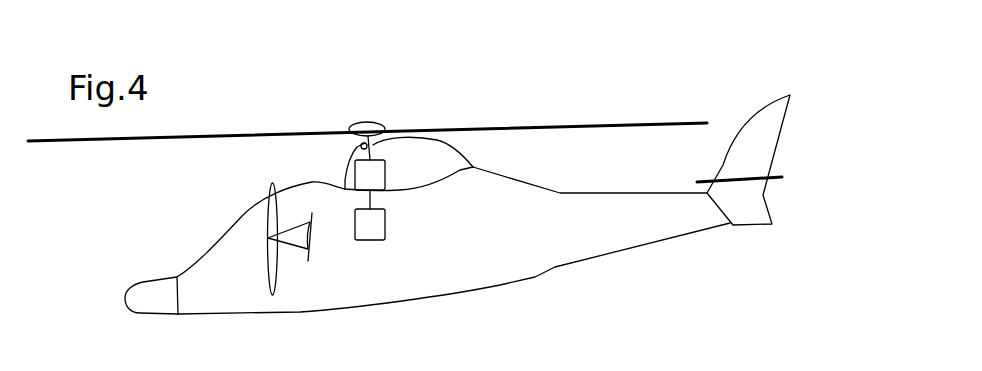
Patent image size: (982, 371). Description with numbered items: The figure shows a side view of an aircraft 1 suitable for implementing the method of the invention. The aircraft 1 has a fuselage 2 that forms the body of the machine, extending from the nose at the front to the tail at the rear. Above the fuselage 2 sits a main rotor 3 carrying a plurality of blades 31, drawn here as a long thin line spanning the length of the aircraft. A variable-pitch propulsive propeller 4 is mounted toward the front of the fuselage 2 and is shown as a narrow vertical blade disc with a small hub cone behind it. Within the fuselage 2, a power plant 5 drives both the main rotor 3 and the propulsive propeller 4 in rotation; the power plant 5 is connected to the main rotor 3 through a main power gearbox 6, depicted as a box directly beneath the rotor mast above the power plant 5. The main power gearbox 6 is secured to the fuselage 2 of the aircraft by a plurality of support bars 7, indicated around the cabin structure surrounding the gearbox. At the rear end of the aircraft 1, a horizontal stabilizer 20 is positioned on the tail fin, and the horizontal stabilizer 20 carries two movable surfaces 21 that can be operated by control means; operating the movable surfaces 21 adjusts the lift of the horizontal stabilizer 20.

The aircraft 1 is at (590, 276).
The fuselage 2 is at (273, 314).
The main rotor 3 is at (404, 118).
The blades 31 is at (567, 122).
The variable-pitch propulsive propeller 4 is at (270, 270).
The power plant 5 is at (369, 241).
The main power gearbox 6 is at (388, 167).
The support bars 7 is at (345, 178).
The horizontal stabilizer 20 is at (710, 178).
The movable surfaces 21 is at (755, 181).